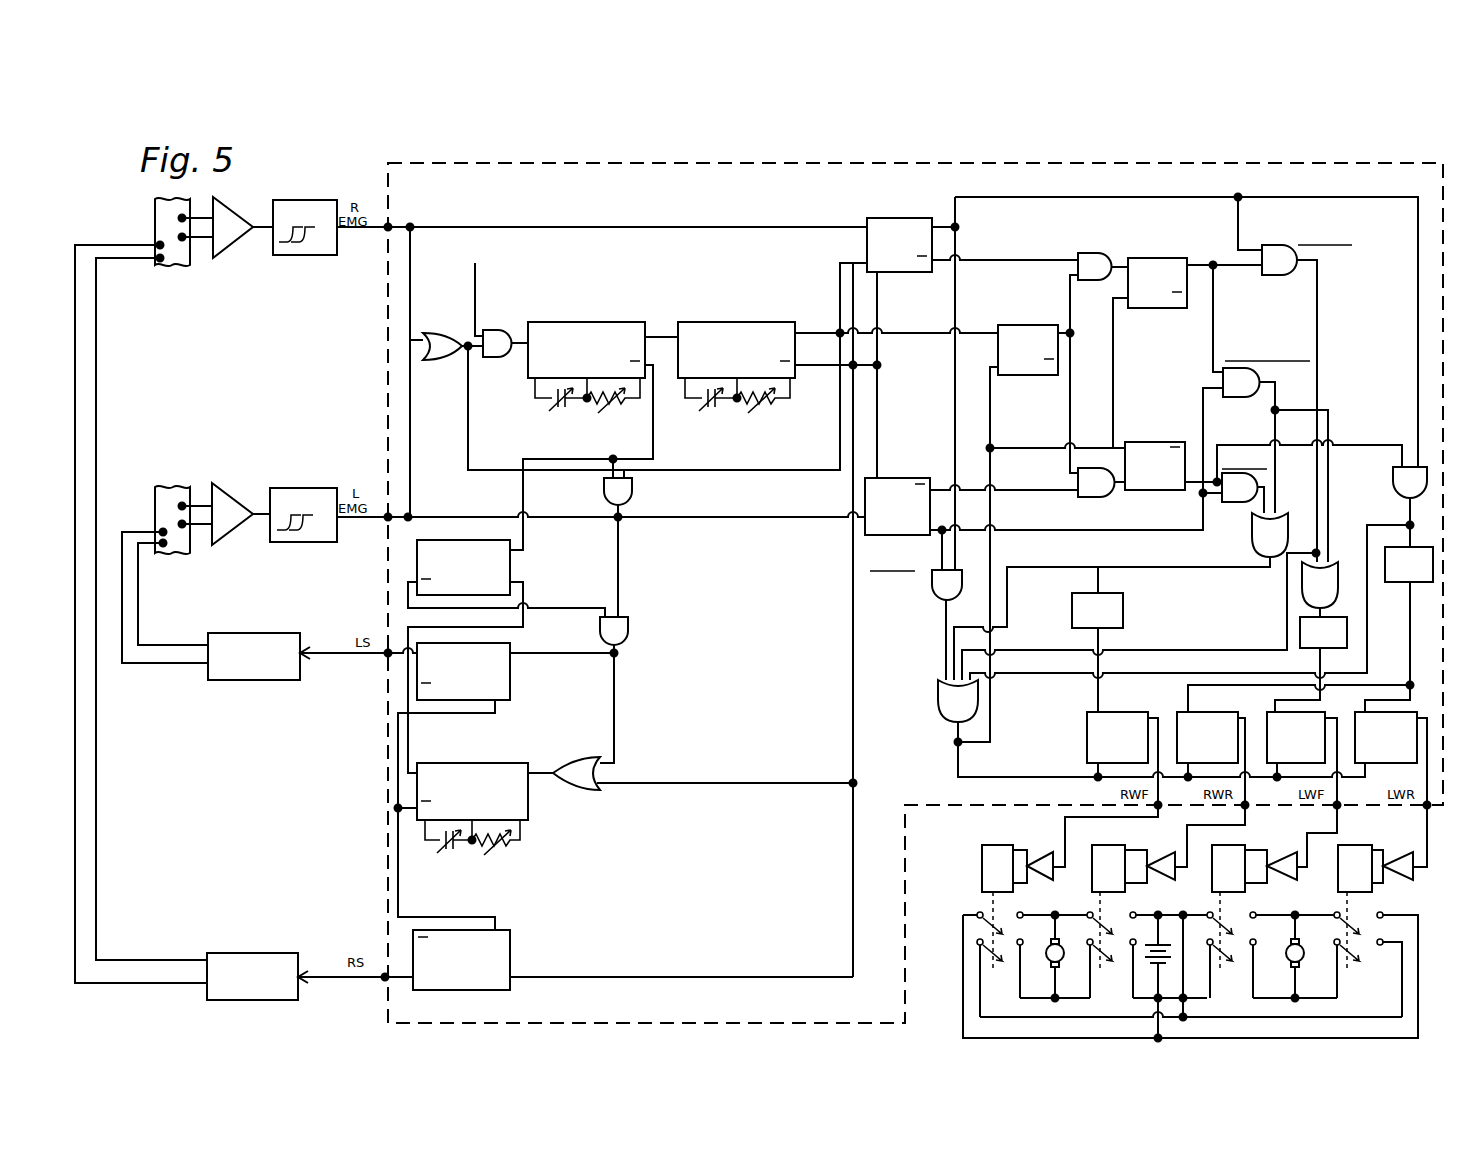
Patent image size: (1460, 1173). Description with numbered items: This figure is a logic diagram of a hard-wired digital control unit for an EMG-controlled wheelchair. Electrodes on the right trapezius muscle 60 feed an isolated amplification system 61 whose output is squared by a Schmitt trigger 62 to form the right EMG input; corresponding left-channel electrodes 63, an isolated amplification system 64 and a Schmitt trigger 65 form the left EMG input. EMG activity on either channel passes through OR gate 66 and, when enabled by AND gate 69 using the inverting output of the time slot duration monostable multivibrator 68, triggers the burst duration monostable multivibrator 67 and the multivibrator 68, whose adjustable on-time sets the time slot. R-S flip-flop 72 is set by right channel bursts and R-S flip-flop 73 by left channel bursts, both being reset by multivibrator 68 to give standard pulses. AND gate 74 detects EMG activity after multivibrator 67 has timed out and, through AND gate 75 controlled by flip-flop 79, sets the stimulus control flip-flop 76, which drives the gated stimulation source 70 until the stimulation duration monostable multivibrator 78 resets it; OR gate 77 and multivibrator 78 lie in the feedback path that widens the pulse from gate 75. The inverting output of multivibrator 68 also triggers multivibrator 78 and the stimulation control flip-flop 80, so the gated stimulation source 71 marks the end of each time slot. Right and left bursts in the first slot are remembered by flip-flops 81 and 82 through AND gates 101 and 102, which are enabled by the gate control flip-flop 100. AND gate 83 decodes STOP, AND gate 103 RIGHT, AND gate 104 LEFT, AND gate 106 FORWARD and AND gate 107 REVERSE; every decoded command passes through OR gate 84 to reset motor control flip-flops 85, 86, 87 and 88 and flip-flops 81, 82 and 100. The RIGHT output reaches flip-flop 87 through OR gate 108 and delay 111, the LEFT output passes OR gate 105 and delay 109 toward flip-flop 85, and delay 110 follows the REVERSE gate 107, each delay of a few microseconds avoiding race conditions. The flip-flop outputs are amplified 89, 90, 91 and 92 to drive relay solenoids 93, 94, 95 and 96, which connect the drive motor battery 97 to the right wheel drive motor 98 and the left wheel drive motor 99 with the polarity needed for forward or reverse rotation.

The electrodes on the right trapezius muscle 60 is at (178, 236).
The isolated amplification system 61 is at (236, 237).
The Schmitt trigger 62 is at (324, 247).
The left EMG electrode 63 is at (178, 525).
The isolated amplification system 64 is at (235, 524).
The Schmitt trigger 65 is at (323, 535).
The OR gate 66 is at (449, 357).
The burst duration monostable multivibrator 67 is at (594, 360).
The time slot duration monostable multivibrator 68 is at (744, 360).
The AND gate 69 is at (504, 354).
The gated stimulation source 70 is at (262, 668).
The gated stimulation source 71 is at (261, 988).
The R-S flip-flop 72 is at (907, 254).
The R-S flip-flop 73 is at (903, 516).
The AND gate 74 is at (618, 492).
The AND gate 75 is at (614, 631).
The stimulus control flip-flop 76 is at (469, 681).
The OR gate 77 is at (585, 783).
The stimulation duration monostable multivibrator 78 is at (474, 804).
The R-S flip-flop 79 is at (471, 578).
The stimulation control R-S flip-flop 80 is at (467, 971).
The R-S flip-flop 81 is at (1164, 294).
The R-S flip-flop 82 is at (1161, 477).
The AND gate 83 is at (947, 585).
The OR gate 84 is at (958, 701).
The motor control flip-flop 85 is at (1124, 750).
The motor control flip-flop 86 is at (1214, 750).
The motor control flip-flop 87 is at (1303, 750).
The motor control flip-flop 88 is at (1392, 750).
The amplifier 89 is at (1048, 852).
The amplifier 90 is at (1170, 852).
The amplifier 91 is at (1291, 852).
The amplifier 92 is at (1409, 852).
The relay solenoid 93 is at (1005, 878).
The RWR relay 94 is at (1116, 878).
The LWF relay 95 is at (1236, 878).
The LWR relay 96 is at (1362, 878).
The drive motor battery 97 is at (1148, 945).
The right wheel drive motor 98 is at (1060, 962).
The left wheel motor 99 is at (1284, 962).
The gate control flip-flop 100 is at (1033, 361).
The AND gate 101 is at (1095, 266).
The AND gate 102 is at (1096, 482).
The AND gate 103 is at (1307, 252).
The AND gate 104 is at (1244, 478).
The OR gate 105 is at (1270, 535).
The FORWARD decoding gate 106 is at (1266, 371).
The REVERSE decoding gate 107 is at (1380, 483).
The OR gate 108 is at (1320, 585).
The delay 109 is at (1103, 622).
The delay 110 is at (1415, 573).
The delay 111 is at (1331, 643).